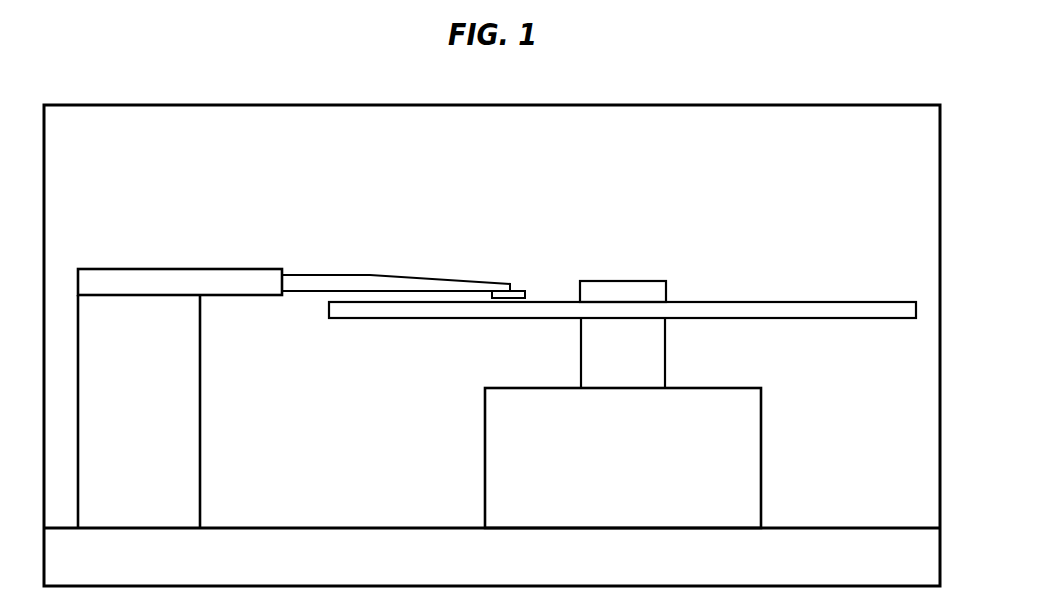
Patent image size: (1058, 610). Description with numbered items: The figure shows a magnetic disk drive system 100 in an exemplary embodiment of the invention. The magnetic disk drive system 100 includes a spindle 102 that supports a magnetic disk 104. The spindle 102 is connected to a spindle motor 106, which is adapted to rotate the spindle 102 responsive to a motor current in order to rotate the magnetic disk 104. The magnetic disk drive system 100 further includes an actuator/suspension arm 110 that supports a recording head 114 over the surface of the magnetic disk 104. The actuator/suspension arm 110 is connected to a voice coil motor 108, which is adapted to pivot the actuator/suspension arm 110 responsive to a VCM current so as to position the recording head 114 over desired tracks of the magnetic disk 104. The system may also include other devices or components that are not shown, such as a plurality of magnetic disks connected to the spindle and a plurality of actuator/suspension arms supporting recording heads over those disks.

The magnetic disk drive system 100 is at (225, 170).
The spindle 102 is at (640, 281).
The magnetic disk 104 is at (812, 301).
The spindle motor 106 is at (643, 481).
The voice coil motor (VCM) 108 is at (160, 454).
The actuator/suspension arm 110 is at (338, 279).
The recording head 114 is at (515, 289).